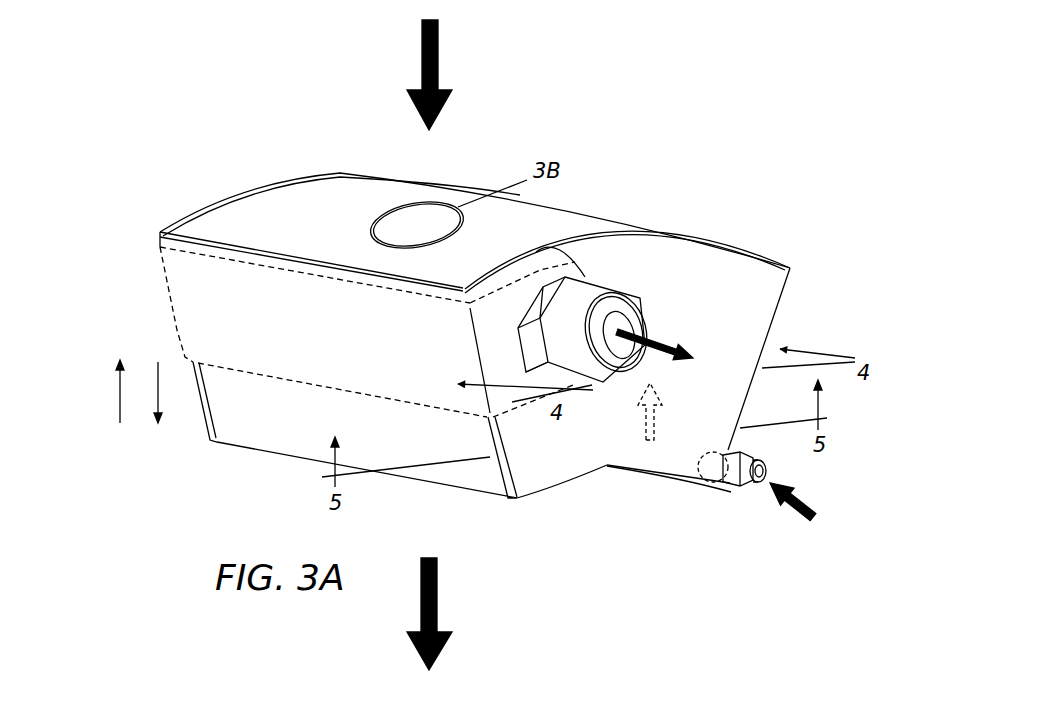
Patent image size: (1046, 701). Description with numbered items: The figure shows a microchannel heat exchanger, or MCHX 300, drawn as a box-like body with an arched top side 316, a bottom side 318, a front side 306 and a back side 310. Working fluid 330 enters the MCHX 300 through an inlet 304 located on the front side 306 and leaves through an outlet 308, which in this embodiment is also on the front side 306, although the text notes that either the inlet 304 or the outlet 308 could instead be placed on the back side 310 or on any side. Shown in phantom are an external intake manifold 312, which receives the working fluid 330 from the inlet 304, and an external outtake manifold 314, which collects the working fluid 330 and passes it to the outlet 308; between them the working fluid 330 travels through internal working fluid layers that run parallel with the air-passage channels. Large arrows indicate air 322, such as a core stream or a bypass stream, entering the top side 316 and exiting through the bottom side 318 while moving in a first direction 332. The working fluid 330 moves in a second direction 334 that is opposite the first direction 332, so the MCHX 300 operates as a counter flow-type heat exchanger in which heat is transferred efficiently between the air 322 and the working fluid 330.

The microchannel heat exchanger (MCHX) 300 is at (220, 132).
The inlet 304 is at (747, 483).
The front side 306 is at (790, 300).
The outlet 308 is at (603, 287).
The back side 310 is at (152, 327).
The external intake manifold 312 is at (733, 488).
The external outtake manifold 314 is at (538, 250).
The top side 316 is at (727, 227).
The bottom side 318 is at (555, 500).
The air 322 is at (440, 53).
The working fluid 330 is at (663, 337).
The first direction 332 is at (162, 390).
The second direction 334 is at (118, 397).